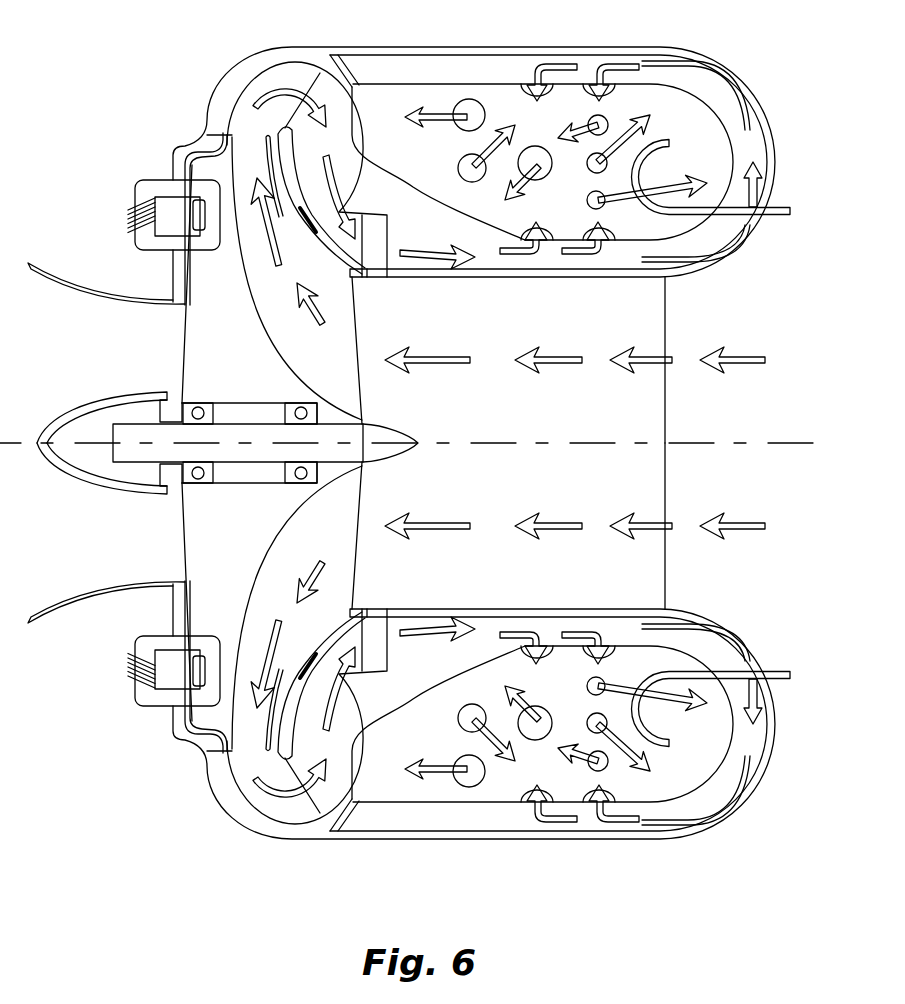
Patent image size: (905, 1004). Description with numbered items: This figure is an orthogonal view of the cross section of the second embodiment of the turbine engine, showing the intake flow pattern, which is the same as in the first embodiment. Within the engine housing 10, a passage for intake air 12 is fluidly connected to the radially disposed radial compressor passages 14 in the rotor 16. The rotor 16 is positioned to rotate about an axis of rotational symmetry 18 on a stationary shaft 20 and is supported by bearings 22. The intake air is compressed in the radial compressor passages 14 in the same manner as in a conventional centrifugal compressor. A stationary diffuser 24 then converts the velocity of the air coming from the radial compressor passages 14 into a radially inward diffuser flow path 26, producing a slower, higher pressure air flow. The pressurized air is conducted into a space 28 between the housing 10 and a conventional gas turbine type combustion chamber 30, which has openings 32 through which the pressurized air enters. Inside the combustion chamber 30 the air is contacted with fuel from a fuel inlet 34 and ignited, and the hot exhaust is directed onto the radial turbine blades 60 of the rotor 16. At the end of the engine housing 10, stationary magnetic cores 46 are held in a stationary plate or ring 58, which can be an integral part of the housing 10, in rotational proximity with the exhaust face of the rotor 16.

The engine housing 10 is at (515, 47).
The intake air passage 12 is at (708, 340).
The radial compressor passages 14 is at (307, 282).
The rotor 16 is at (232, 348).
The axis of rotational symmetry 18 is at (786, 443).
The stationary shaft 20 is at (221, 454).
The bearings 22 is at (205, 408).
The stationary diffuser 24 is at (352, 138).
The radially inward diffuser flow path 26 is at (352, 252).
The space 28 is at (442, 80).
The combustion chamber 30 is at (569, 215).
The openings 32 is at (464, 128).
The fuel inlet 34 is at (666, 145).
The magnetic cores 46 is at (152, 180).
The stationary plate or ring 58 is at (182, 346).
The radial turbine blades 60 is at (132, 212).